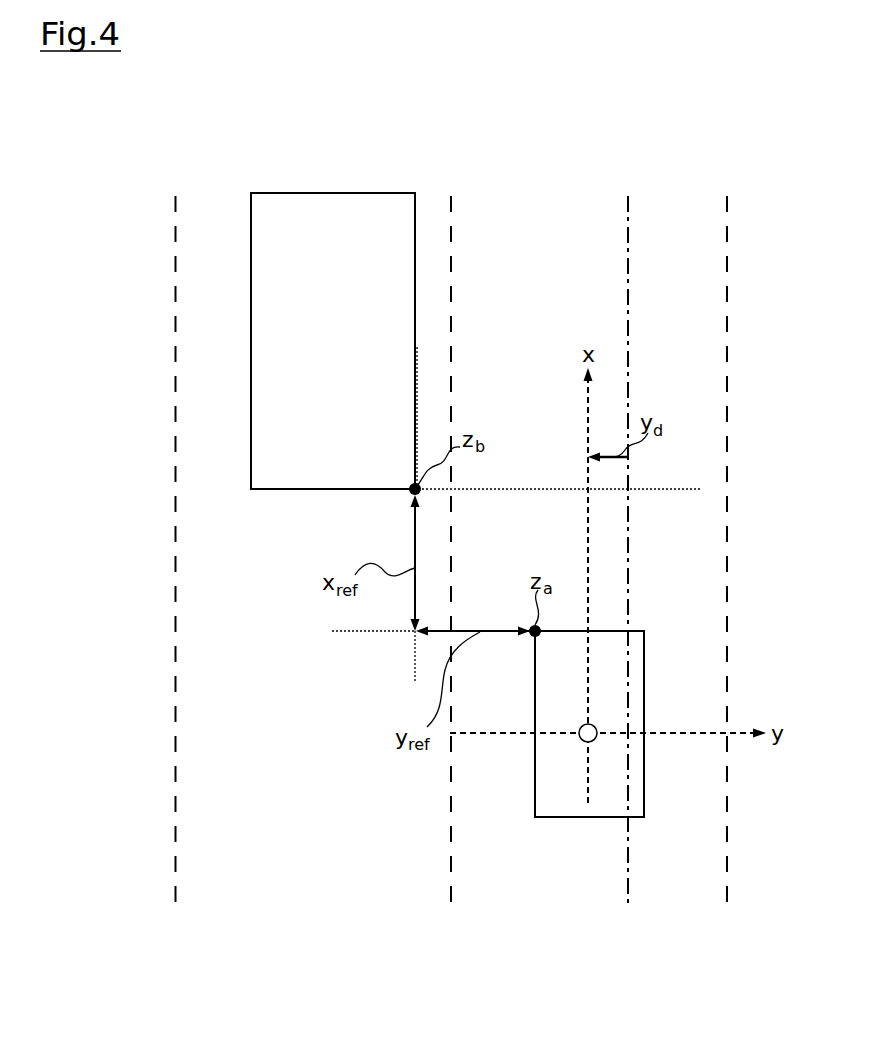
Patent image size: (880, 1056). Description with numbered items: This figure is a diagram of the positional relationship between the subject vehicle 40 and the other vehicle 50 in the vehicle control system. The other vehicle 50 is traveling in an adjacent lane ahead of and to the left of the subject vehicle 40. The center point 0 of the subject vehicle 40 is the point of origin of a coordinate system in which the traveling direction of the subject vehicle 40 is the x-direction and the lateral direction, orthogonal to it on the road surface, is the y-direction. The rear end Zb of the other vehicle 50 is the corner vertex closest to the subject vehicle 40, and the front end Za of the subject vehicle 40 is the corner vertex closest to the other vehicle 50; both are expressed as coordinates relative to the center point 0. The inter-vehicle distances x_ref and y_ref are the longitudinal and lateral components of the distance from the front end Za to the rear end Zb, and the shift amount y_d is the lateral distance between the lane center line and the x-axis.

The other vehicle 50 is at (330, 192).
The subject vehicle 40 is at (644, 682).
The center point 0 is at (579, 740).